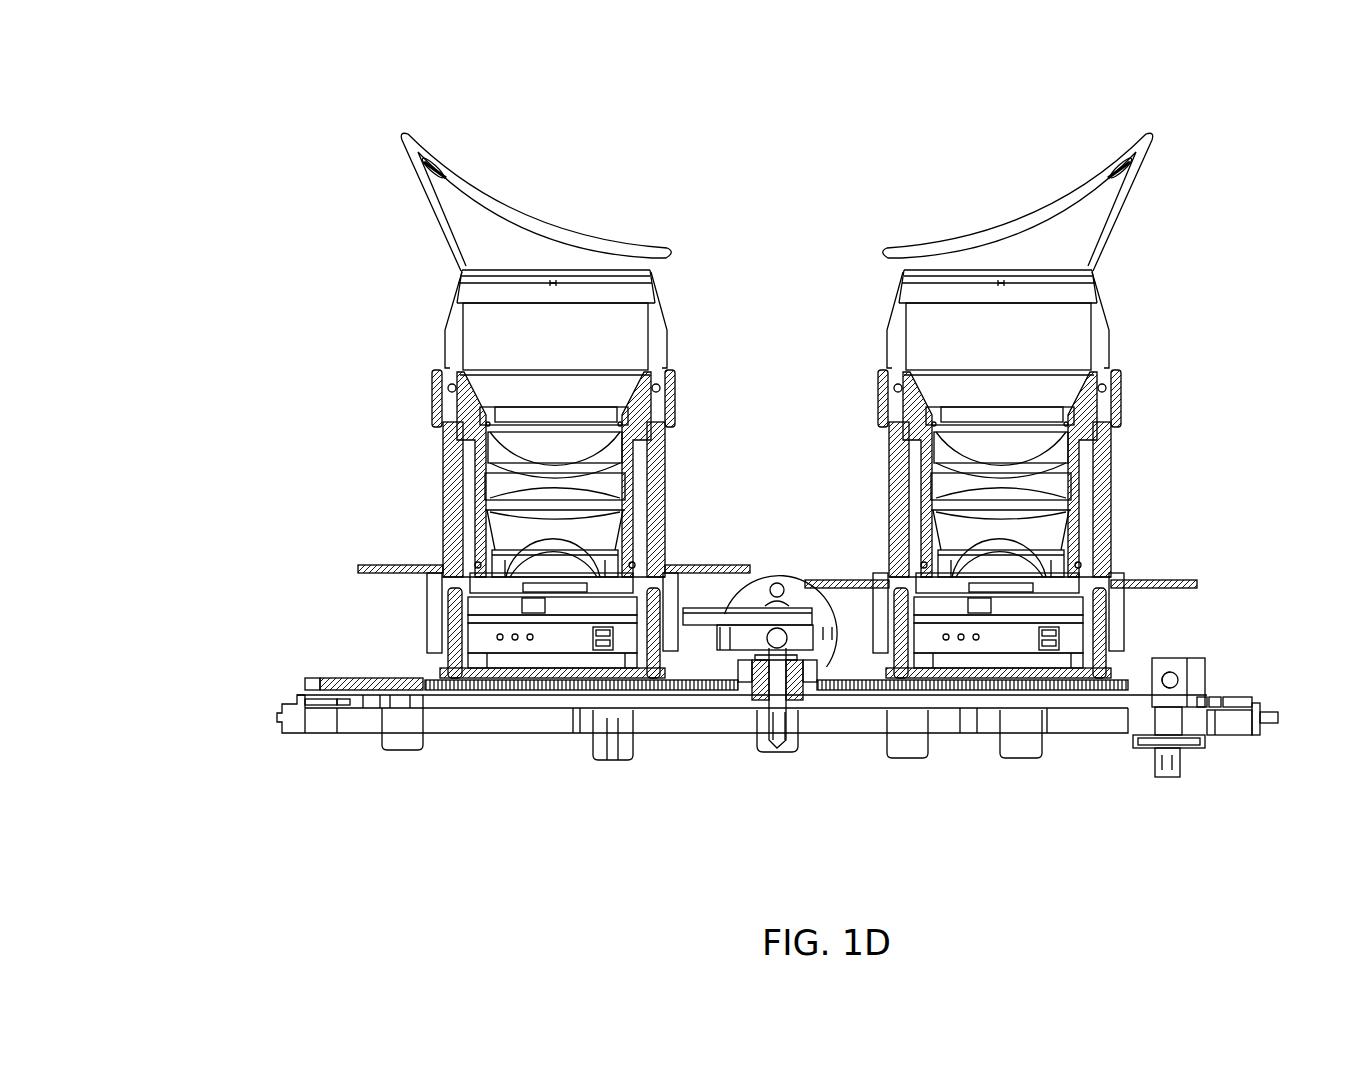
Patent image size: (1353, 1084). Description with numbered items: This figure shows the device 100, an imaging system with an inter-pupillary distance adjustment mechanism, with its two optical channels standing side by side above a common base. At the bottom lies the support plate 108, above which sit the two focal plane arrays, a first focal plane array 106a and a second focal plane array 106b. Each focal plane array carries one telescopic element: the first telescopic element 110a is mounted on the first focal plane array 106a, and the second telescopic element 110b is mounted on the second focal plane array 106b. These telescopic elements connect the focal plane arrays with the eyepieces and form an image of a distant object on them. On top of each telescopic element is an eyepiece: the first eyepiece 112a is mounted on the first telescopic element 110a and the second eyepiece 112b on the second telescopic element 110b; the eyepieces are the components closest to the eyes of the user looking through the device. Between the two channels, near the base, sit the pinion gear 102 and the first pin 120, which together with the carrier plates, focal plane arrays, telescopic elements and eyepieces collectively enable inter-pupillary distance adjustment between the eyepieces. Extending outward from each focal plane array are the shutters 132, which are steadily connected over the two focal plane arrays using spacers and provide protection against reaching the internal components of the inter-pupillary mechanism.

The device 100 is at (187, 78).
The pinion gear 102 is at (800, 683).
The first focal plane array 106a is at (927, 620).
The second focal plane array 106b is at (627, 620).
The support plate 108 is at (540, 722).
The first telescopic element 110a is at (889, 480).
The second telescopic element 110b is at (666, 480).
The first eyepiece 112a is at (1027, 222).
The second eyepiece 112b is at (527, 222).
The first pin 120 is at (778, 680).
The shutters 132 is at (378, 564).